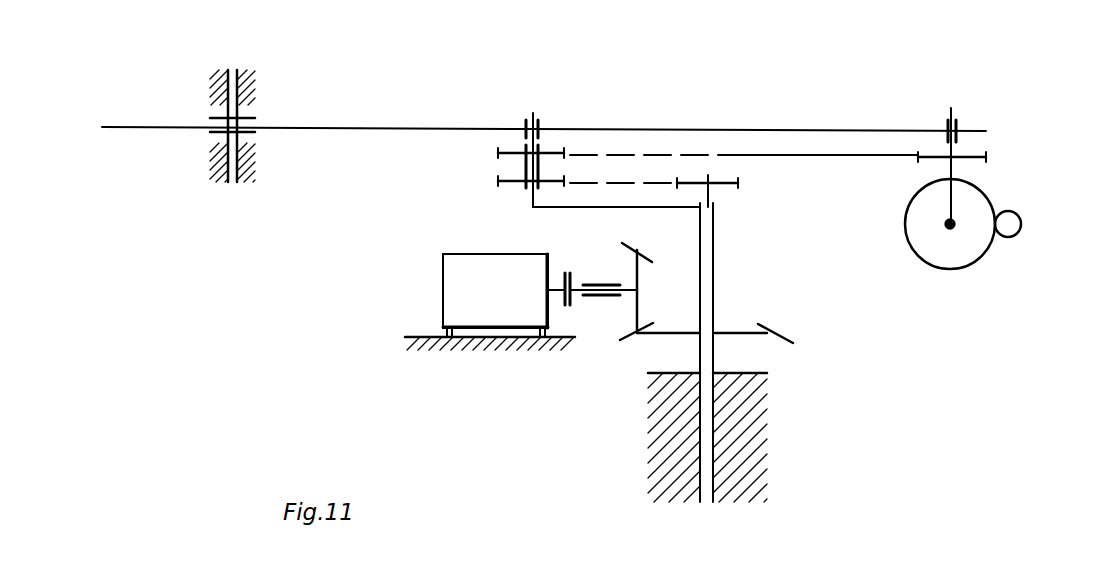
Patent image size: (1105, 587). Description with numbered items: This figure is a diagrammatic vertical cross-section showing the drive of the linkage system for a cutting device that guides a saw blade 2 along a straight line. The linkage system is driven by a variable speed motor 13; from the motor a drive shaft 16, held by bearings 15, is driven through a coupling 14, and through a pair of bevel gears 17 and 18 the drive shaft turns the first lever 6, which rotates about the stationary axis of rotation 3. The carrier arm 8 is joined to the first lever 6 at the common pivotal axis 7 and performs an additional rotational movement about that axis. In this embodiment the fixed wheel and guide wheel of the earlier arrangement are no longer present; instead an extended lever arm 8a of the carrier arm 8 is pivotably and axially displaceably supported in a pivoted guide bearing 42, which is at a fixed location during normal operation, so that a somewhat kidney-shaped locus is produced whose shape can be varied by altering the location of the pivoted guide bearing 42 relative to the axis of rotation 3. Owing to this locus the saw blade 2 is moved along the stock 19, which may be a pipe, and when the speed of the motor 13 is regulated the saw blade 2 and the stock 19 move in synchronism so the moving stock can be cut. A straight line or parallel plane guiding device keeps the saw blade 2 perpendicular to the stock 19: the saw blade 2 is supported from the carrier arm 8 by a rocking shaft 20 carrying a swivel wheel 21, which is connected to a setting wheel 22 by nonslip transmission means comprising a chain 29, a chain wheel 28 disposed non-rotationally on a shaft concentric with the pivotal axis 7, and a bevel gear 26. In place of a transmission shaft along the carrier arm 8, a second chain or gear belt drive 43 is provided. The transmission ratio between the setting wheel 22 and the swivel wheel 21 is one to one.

The saw blade 2 is at (958, 255).
The stationary axis of rotation 3 is at (710, 300).
The first lever 6 is at (610, 207).
The pivotal axis 7 is at (533, 113).
The carrier arm 8 is at (735, 129).
The extended lever arm 8a is at (363, 127).
The variable speed motor 13 is at (460, 282).
The coupling 14 is at (545, 337).
The bearings 15 is at (567, 307).
The drive shaft 16 is at (598, 297).
The bevel gear 17 is at (637, 308).
The bevel gear 18 is at (742, 330).
The stock 19 is at (1020, 232).
The rocking shaft 20 is at (955, 112).
The swivel wheel 21 is at (975, 158).
The setting wheel 22 is at (725, 185).
The bevel gear 26 is at (498, 153).
The chain wheel 28 is at (498, 183).
The chain 29 is at (610, 181).
The pivoted guide bearing 42 is at (260, 83).
The second chain or gear belt drive 43 is at (812, 155).